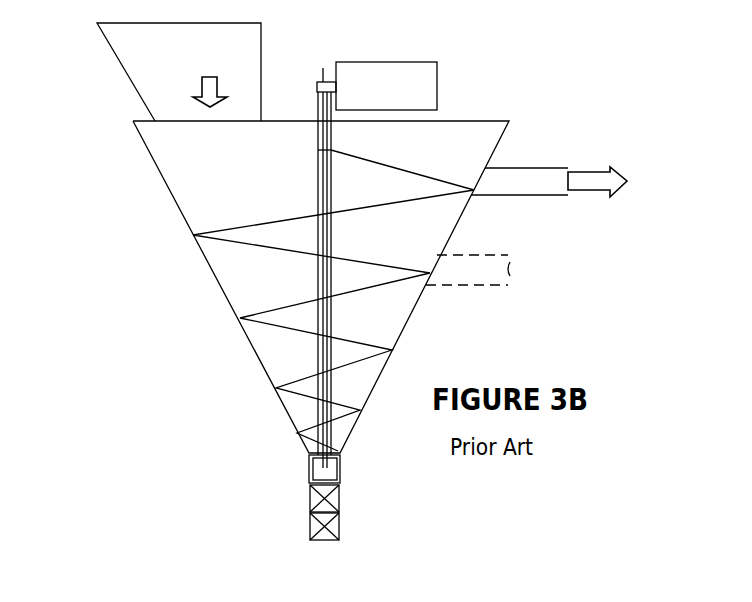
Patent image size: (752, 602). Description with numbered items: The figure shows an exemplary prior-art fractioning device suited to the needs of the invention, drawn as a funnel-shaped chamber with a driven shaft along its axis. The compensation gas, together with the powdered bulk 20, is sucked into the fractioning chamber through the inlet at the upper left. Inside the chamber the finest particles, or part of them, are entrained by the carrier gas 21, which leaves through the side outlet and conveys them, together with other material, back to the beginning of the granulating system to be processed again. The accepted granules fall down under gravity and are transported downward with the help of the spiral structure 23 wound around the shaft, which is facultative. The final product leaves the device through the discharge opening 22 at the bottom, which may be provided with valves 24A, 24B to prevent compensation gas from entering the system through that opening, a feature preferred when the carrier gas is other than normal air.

The powdered bulk 20 is at (183, 78).
The carrier gas 21 is at (554, 161).
The discharge opening 22 is at (310, 460).
The spiral structure 23 is at (370, 260).
The valve 24A is at (340, 497).
The valve 24B is at (338, 530).